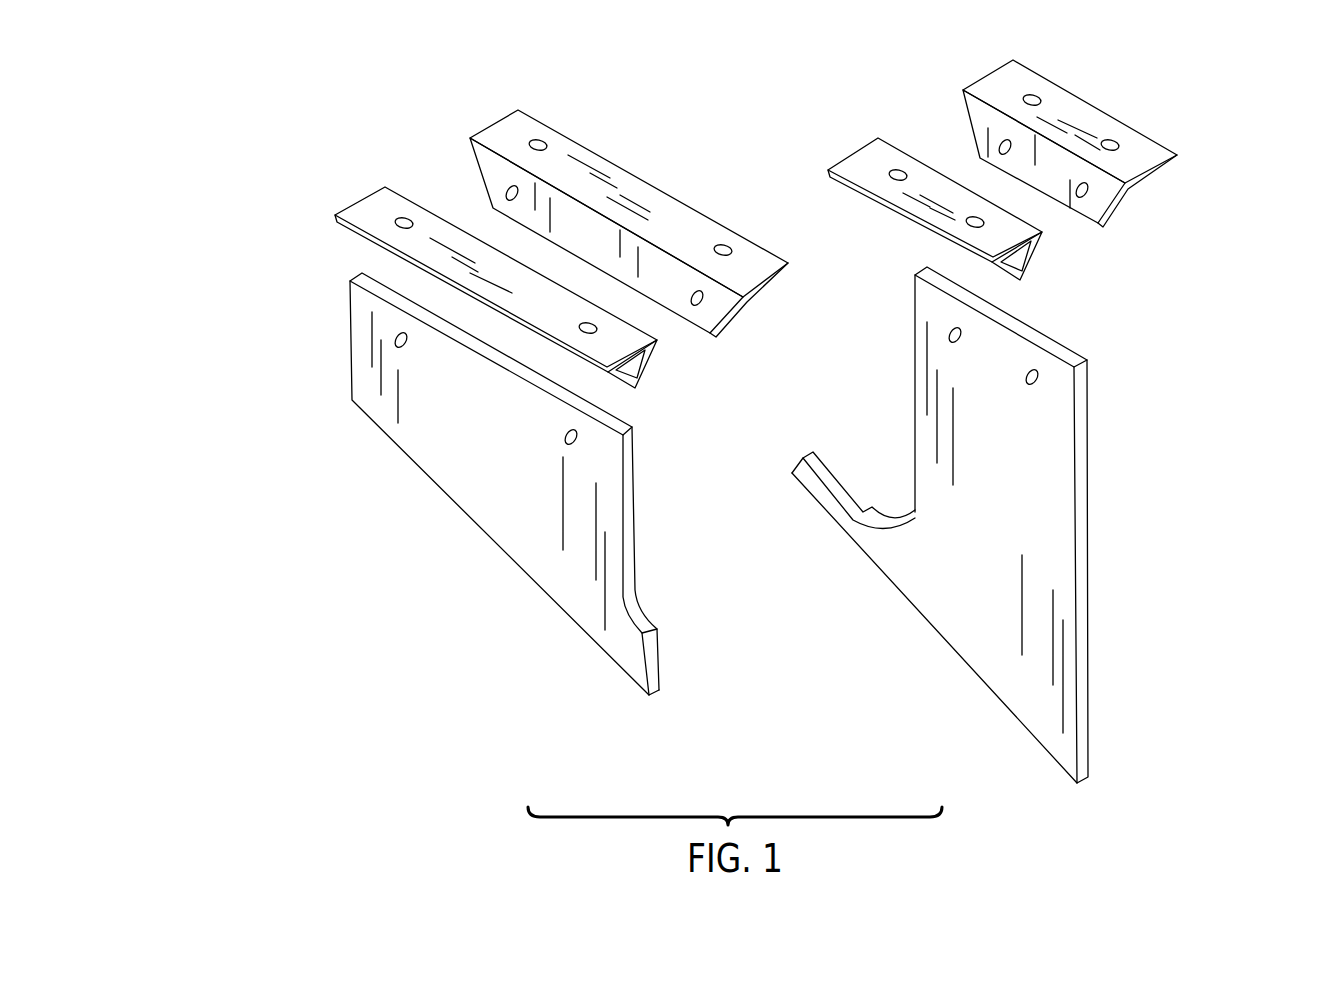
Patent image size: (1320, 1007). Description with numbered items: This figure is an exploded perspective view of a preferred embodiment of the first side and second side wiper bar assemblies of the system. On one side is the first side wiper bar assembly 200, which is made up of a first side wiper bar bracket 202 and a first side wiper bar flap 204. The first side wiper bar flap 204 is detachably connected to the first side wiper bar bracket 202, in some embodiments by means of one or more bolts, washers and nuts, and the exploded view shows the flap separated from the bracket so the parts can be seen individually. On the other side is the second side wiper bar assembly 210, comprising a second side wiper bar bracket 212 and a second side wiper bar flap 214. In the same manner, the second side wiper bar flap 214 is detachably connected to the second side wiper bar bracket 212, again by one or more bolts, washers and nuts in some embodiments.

The first side wiper bar assembly 200 is at (1046, 405).
The first side wiper bar bracket 202 is at (880, 157).
The first side wiper bar flap 204 is at (958, 655).
The second side wiper bar assembly 210 is at (453, 371).
The second side wiper bar bracket 212 is at (505, 130).
The second side wiper bar flap 214 is at (659, 643).